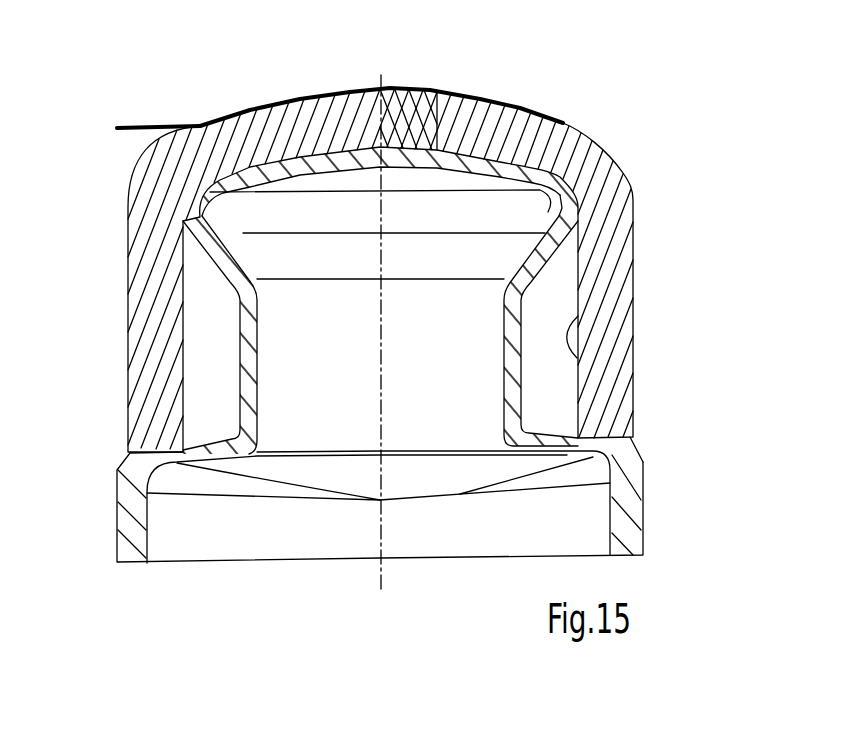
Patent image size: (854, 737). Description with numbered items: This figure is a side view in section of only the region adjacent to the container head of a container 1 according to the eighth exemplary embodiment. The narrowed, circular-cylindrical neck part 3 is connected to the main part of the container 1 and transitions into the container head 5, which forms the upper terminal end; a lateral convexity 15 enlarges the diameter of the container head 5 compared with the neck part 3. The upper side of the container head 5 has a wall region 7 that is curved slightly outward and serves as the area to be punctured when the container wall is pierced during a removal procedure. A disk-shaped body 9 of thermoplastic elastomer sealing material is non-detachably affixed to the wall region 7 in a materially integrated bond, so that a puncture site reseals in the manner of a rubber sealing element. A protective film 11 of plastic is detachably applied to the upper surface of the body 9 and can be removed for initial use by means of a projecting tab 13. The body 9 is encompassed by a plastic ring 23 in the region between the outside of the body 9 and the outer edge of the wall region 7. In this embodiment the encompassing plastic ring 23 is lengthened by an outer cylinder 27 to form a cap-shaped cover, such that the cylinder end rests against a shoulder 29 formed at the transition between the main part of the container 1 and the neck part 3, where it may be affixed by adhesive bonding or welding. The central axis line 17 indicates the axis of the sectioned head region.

The container 1 is at (127, 522).
The neck part 3 is at (247, 364).
The container head 5 is at (577, 172).
The wall region 7 is at (280, 192).
The disk-shaped body 9 is at (422, 90).
The protective film 11 is at (250, 105).
The projecting tab 13 is at (140, 127).
The lateral convexity 15 is at (575, 215).
The central axis 17 is at (381, 537).
The plastic ring 23 is at (537, 140).
The outer cylinder 27 is at (577, 358).
The shoulder 29 is at (627, 436).